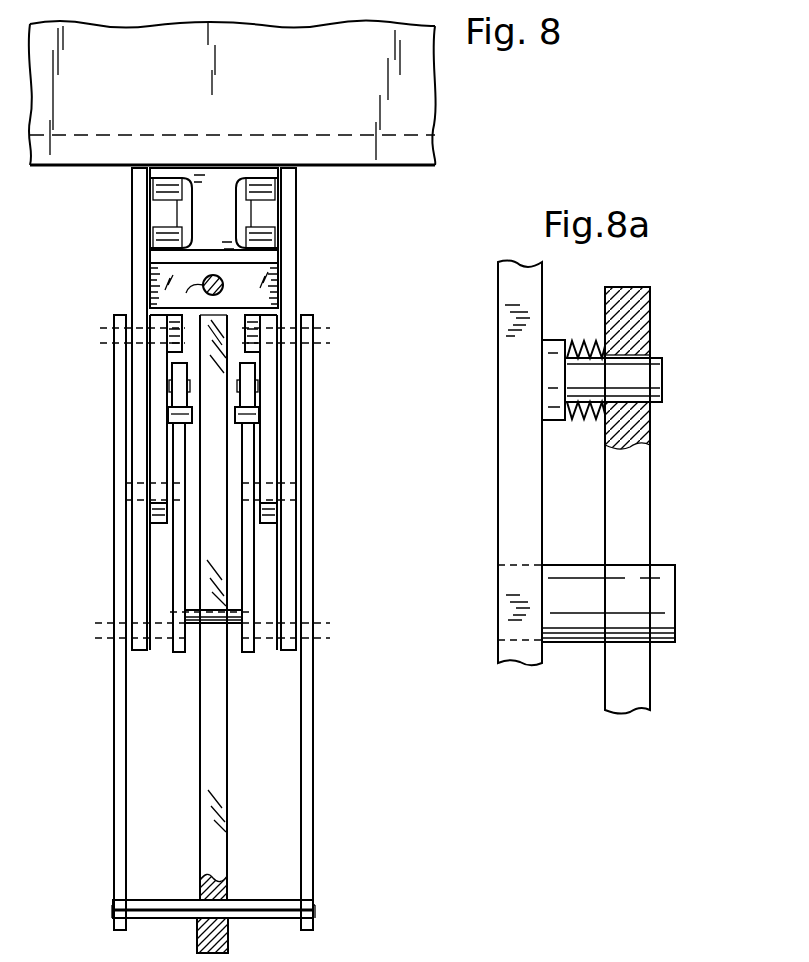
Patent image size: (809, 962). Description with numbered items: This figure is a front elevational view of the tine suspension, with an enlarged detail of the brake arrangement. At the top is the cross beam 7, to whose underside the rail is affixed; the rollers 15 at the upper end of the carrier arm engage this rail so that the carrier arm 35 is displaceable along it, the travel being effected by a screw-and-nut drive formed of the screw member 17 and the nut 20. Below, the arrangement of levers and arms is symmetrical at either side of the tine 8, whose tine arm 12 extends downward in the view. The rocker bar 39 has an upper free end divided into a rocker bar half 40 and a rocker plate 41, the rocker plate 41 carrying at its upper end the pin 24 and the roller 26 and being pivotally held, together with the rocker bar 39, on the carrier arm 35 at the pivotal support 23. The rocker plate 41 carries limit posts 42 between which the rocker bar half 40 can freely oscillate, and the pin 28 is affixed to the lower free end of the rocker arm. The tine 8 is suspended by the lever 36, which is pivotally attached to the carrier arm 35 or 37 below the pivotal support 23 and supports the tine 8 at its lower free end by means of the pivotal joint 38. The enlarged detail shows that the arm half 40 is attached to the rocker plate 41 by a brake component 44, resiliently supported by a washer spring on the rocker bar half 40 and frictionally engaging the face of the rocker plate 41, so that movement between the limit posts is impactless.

In FIG. 8, the cross beam 7 is at (420, 101).
In FIG. 8, the tine 8 is at (239, 926).
In FIG. 8, the tine arm 12 is at (228, 792).
In FIG. 8, the rollers 15 is at (165, 222).
In FIG. 8, the screw member 17 is at (186, 283).
In FIG. 8, the nut 20 is at (258, 293).
In FIG. 8, the pivotal support 23 is at (140, 493).
In FIG. 8, the pin 24 is at (160, 333).
In FIG. 8, the roller 26 is at (175, 312).
In FIG. 8, the pin 28 is at (217, 625).
In FIG. 8, the carrier arm 35 is at (140, 240).
In FIG. 8, the lever 36 is at (116, 742).
In FIG. 8, the carrier arm 37 is at (116, 631).
In FIG. 8, the pivotal joint 38 is at (165, 907).
In FIG. 8, the rocker bar 39 is at (178, 655).
In FIG. 8, the rocker bar half 40 is at (248, 445).
In FIG. 8A, the rocker bar half 40 is at (613, 513).
In FIG. 8, the rocker plate 41 is at (160, 357).
In FIG. 8A, the rocker plate 41 is at (510, 486).
In FIG. 8, the limit post 42 is at (180, 418).
In FIG. 8A, the limit post 42 is at (580, 633).
In FIG. 8, the brake component 44 is at (175, 385).
In FIG. 8A, the brake component 44 is at (650, 372).